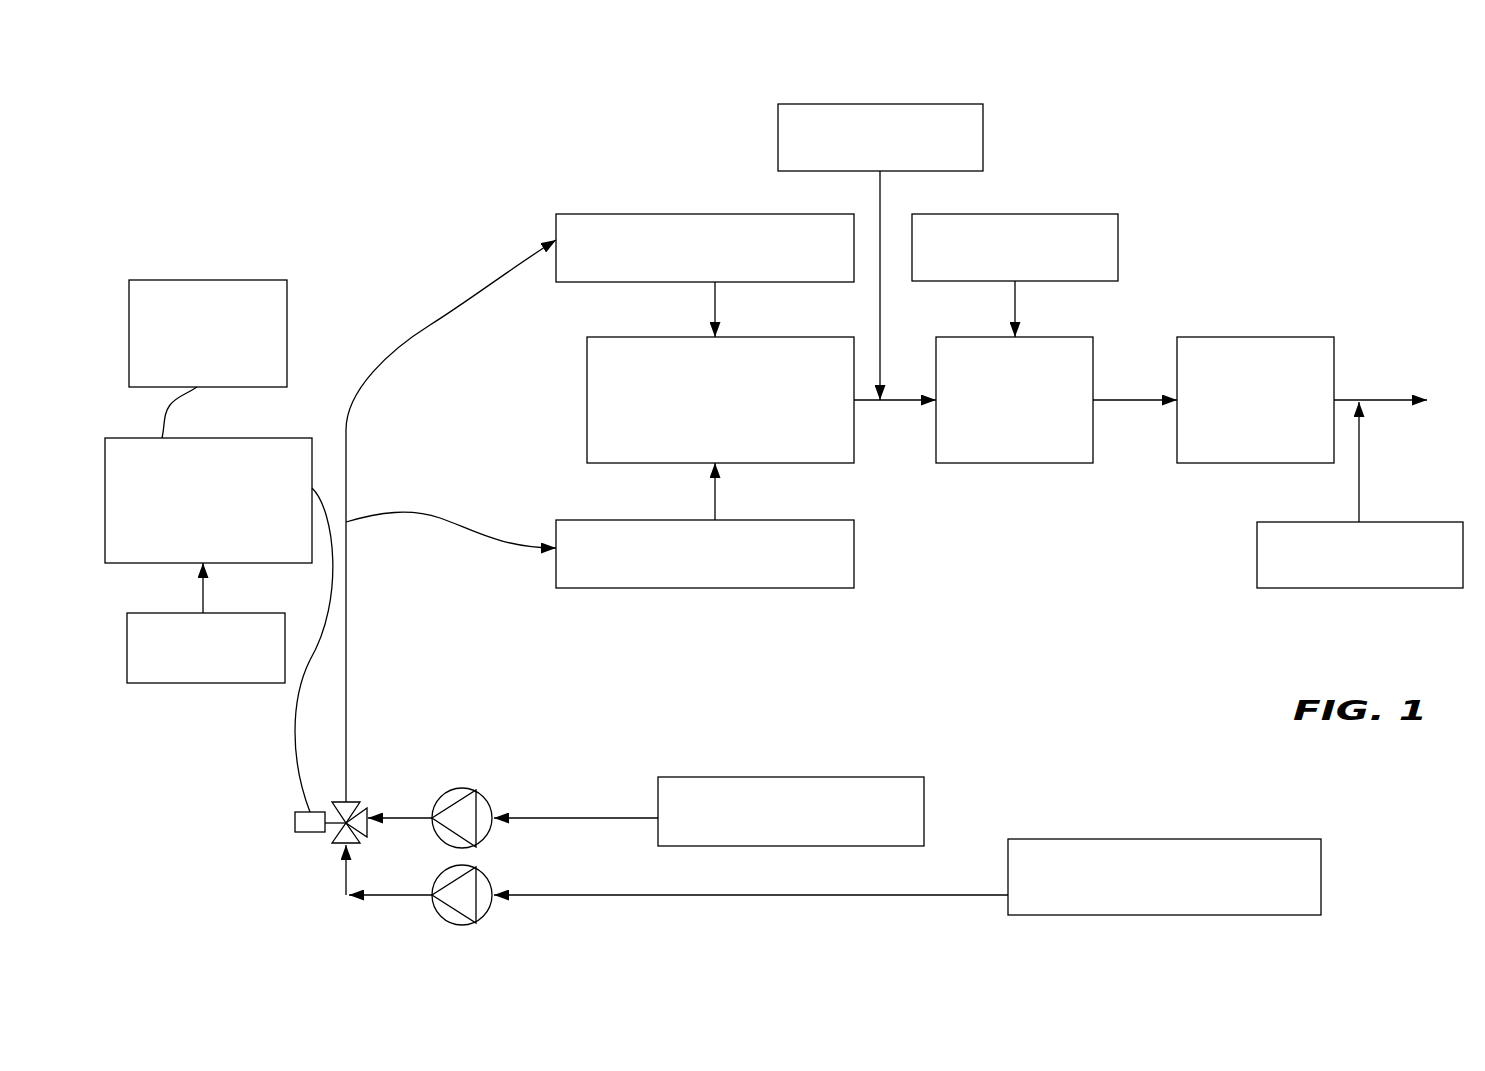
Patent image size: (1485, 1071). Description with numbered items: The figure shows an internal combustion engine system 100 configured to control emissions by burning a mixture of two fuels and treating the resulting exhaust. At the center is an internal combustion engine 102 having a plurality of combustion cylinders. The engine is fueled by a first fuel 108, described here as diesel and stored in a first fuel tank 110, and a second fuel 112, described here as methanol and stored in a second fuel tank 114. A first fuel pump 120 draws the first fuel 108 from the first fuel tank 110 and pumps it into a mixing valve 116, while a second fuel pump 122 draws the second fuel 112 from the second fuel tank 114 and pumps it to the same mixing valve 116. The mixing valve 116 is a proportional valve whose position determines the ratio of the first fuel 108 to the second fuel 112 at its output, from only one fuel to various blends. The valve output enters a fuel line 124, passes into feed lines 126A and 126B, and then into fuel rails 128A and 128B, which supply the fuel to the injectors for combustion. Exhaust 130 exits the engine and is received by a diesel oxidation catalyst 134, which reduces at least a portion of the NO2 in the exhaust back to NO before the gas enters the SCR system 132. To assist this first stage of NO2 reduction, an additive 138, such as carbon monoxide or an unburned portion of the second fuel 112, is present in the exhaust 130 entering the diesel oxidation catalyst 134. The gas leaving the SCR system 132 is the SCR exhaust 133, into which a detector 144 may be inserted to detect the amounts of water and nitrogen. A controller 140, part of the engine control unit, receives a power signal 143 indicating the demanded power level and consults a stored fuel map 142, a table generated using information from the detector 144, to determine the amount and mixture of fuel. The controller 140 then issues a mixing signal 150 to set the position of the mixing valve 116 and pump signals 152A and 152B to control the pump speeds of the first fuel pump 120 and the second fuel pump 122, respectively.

The internal combustion engine system 100 is at (280, 93).
The internal combustion engine 102 is at (699, 410).
The first fuel 108 is at (835, 780).
The first fuel tank 110 is at (771, 822).
The second fuel 112 is at (1207, 855).
The second fuel tank 114 is at (1142, 889).
The mixing valve 116 is at (358, 797).
The first fuel pump 120 is at (479, 786).
The second fuel pump 122 is at (441, 874).
The fuel line 124 is at (346, 582).
The feed line 126A is at (423, 333).
The feed line 126B is at (482, 533).
The fuel rail 128A is at (675, 564).
The fuel rail 128B is at (675, 258).
The exhaust 130 is at (909, 401).
The SCR system 132 is at (1234, 412).
The SCR exhaust 133 is at (1370, 398).
The diesel oxidation catalyst 134 is at (994, 412).
The additive 138 is at (859, 148).
The controller 140 is at (187, 510).
The fuel map 142 is at (185, 658).
The power signal 143 is at (187, 342).
The detector 144 is at (1339, 566).
The mixing signal 150 is at (305, 833).
The pump signal 152A is at (448, 788).
The pump signal 152B is at (488, 868).